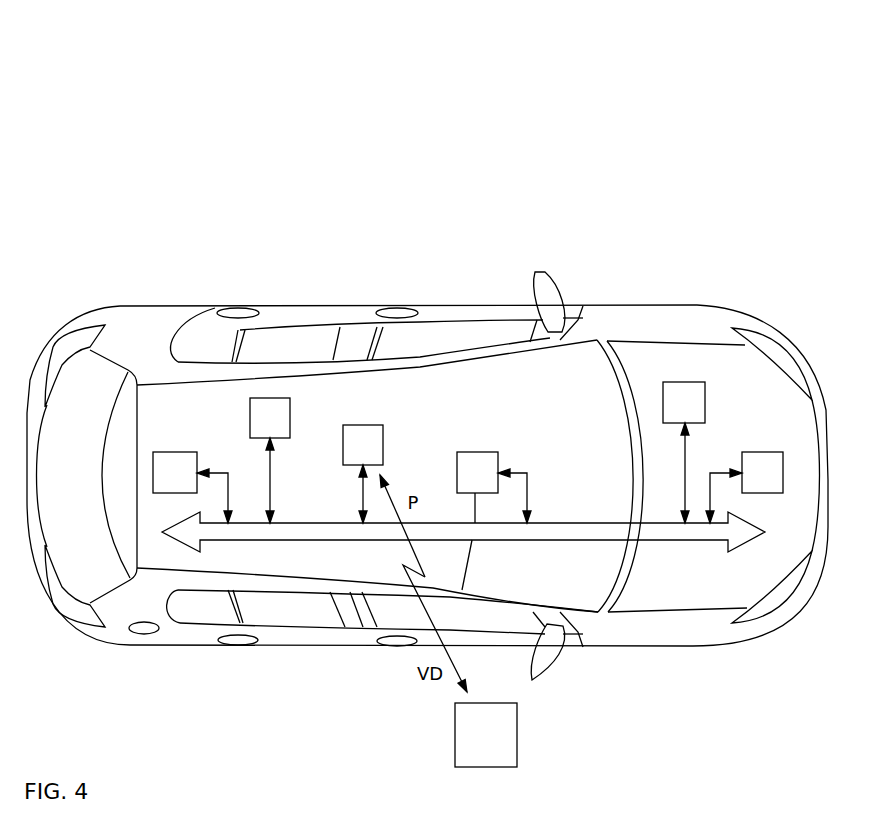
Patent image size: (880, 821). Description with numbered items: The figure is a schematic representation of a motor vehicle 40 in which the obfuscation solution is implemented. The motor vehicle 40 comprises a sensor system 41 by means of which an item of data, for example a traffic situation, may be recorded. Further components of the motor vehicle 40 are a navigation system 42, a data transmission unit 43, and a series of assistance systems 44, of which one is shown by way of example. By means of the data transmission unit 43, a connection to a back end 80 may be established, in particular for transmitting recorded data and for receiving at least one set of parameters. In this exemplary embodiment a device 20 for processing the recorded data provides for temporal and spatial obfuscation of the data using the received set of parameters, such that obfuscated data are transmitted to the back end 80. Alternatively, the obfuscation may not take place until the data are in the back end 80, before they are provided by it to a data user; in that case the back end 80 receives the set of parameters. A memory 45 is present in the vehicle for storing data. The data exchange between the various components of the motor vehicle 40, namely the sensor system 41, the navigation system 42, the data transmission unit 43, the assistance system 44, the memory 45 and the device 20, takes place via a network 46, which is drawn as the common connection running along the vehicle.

The motor vehicle 40 is at (697, 305).
The device 20 is at (705, 403).
The sensor system 41 is at (470, 452).
The navigation system 42 is at (258, 398).
The data transmission unit 43 is at (360, 425).
The assistance system 44 is at (762, 452).
The memory 45 is at (173, 452).
The network 46 is at (298, 540).
The back end 80 is at (517, 737).